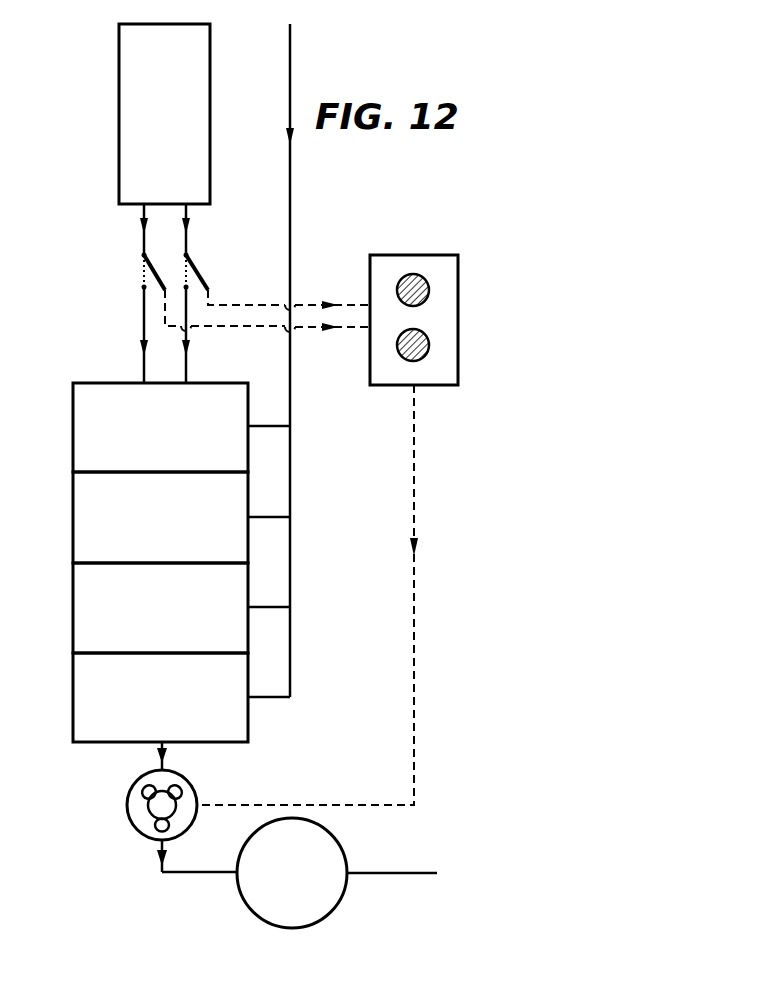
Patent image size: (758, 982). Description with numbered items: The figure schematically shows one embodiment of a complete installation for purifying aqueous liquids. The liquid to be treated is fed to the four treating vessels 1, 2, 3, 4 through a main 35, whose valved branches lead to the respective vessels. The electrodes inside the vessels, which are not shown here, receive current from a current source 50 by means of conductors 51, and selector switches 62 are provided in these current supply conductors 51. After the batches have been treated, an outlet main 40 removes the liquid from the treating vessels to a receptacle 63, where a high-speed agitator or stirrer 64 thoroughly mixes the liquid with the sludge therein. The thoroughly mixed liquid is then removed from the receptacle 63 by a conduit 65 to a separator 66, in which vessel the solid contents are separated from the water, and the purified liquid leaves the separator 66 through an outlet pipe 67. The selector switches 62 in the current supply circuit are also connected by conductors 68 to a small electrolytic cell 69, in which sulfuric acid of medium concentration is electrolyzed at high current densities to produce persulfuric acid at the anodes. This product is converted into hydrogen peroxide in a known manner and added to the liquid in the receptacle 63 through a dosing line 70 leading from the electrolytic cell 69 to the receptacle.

The treating vessel 1 is at (97, 430).
The treating vessel 2 is at (98, 522).
The treating vessel 3 is at (103, 611).
The treating vessel 4 is at (100, 700).
The main 35 is at (290, 264).
The outlet main 40 is at (160, 763).
The current source 50 is at (138, 141).
The conductors 51 is at (186, 367).
The selector switches 62 is at (156, 274).
The receptacle 63 is at (135, 828).
The high-speed agitator or stirrer 64 is at (148, 804).
The conduit 65 is at (160, 847).
The separator 66 is at (342, 846).
The outlet pipe 67 is at (395, 876).
The conductors 68 is at (260, 307).
The electrolytic cell 69 is at (385, 362).
The dosing line 70 is at (414, 453).